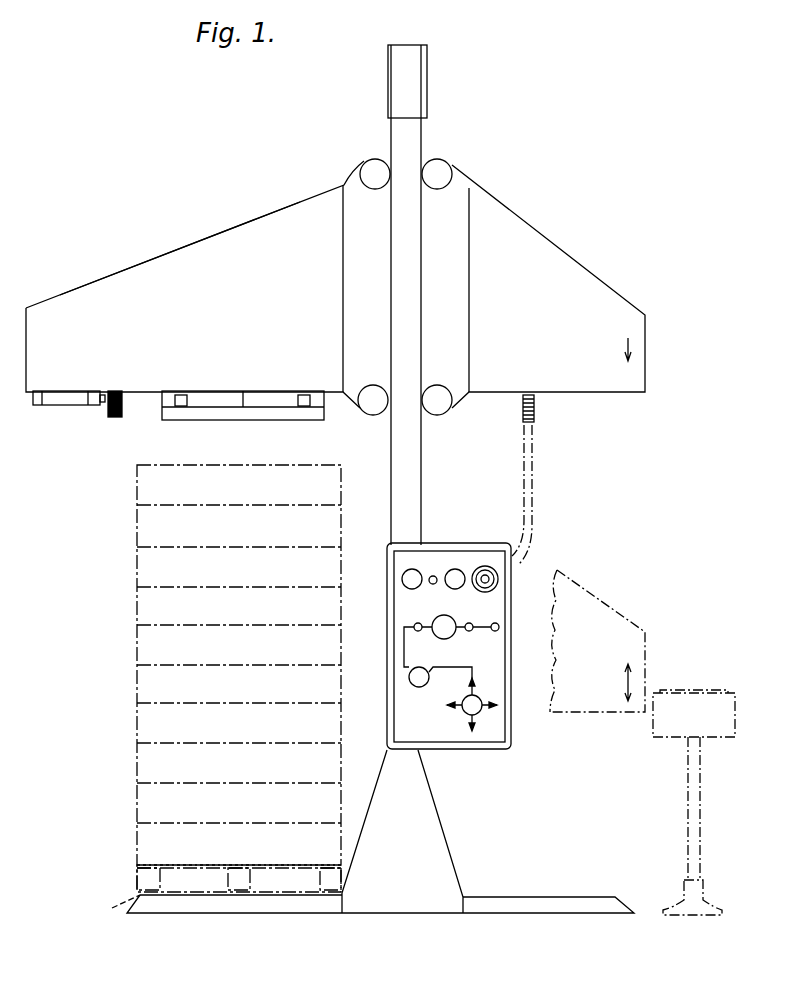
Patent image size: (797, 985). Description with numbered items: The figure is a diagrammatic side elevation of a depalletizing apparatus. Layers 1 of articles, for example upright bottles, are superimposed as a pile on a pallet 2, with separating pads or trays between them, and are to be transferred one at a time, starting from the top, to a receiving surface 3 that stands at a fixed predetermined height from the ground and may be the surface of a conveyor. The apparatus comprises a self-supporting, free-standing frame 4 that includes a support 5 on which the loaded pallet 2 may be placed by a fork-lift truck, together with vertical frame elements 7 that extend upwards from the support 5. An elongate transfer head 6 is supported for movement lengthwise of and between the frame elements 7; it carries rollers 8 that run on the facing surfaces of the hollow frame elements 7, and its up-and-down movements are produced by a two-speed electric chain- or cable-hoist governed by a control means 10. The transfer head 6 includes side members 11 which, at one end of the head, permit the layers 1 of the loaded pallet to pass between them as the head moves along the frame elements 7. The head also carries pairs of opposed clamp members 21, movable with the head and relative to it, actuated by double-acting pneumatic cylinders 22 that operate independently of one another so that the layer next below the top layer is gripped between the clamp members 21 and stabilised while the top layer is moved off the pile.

The layers 1 is at (140, 556).
The pallet 2 is at (183, 873).
The receiving surface 3 is at (700, 688).
The frame 4 is at (439, 810).
The support 5 is at (290, 900).
The transfer head 6 is at (556, 244).
The vertical frame elements 7 is at (415, 500).
The rollers 8 is at (372, 165).
The control means 10 is at (530, 574).
The side members 11 is at (236, 235).
The clamp members 21 is at (106, 410).
The pneumatic cylinders 22 is at (69, 410).